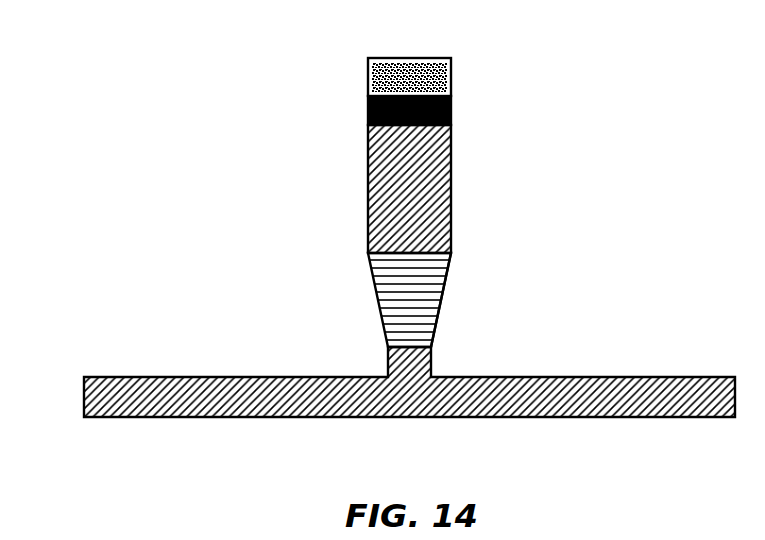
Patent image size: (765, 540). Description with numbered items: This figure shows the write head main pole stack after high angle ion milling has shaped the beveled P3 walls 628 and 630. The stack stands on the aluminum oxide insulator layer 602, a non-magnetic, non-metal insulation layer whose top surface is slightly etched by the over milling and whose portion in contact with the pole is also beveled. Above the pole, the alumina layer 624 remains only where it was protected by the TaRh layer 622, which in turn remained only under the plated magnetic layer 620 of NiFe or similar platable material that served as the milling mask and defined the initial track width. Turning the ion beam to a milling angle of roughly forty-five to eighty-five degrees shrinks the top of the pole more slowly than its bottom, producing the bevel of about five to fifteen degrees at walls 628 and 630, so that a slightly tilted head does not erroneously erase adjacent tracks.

The aluminum oxide insulator layer 602 is at (84, 398).
The magnetic layer 620 is at (367, 78).
The TaRh layer 622 is at (451, 110).
The alumina layer 624 is at (368, 188).
The beveled P3 wall 628 is at (443, 311).
The beveled P3 wall 630 is at (375, 311).